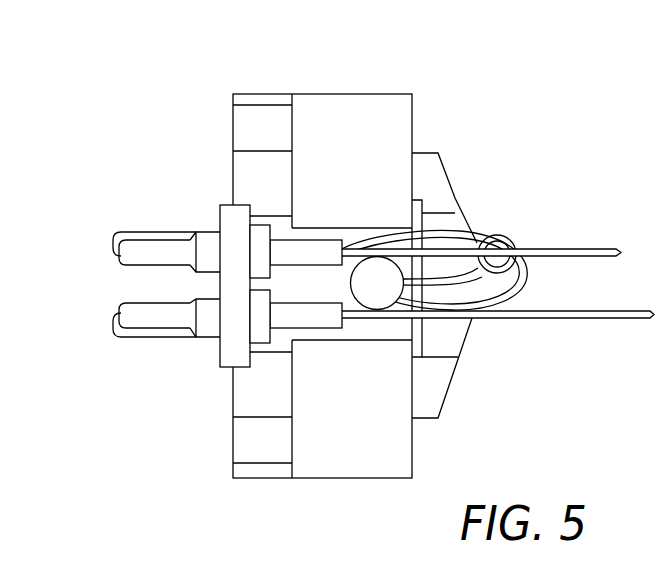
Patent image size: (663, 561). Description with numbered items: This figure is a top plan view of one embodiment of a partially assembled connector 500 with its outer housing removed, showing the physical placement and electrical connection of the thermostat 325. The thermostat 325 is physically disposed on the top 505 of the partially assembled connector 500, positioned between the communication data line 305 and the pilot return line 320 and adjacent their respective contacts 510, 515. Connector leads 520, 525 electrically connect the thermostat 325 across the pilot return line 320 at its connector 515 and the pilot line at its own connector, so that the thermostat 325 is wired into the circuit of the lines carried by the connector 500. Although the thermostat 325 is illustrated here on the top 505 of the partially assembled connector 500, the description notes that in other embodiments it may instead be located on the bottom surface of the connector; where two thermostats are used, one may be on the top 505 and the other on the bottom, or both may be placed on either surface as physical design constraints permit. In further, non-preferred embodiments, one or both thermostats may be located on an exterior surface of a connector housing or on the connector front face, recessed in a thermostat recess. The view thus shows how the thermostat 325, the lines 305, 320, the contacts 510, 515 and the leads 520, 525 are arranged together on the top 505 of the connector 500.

The partially assembled connector 500 is at (339, 251).
The top 505 is at (274, 208).
The contact 510 is at (118, 314).
The contact 515 is at (120, 254).
The connector lead 520 is at (448, 231).
The connector lead 525 is at (523, 282).
The pilot return line 320 is at (597, 249).
The communication data line 305 is at (613, 322).
The thermostat 325 is at (383, 293).